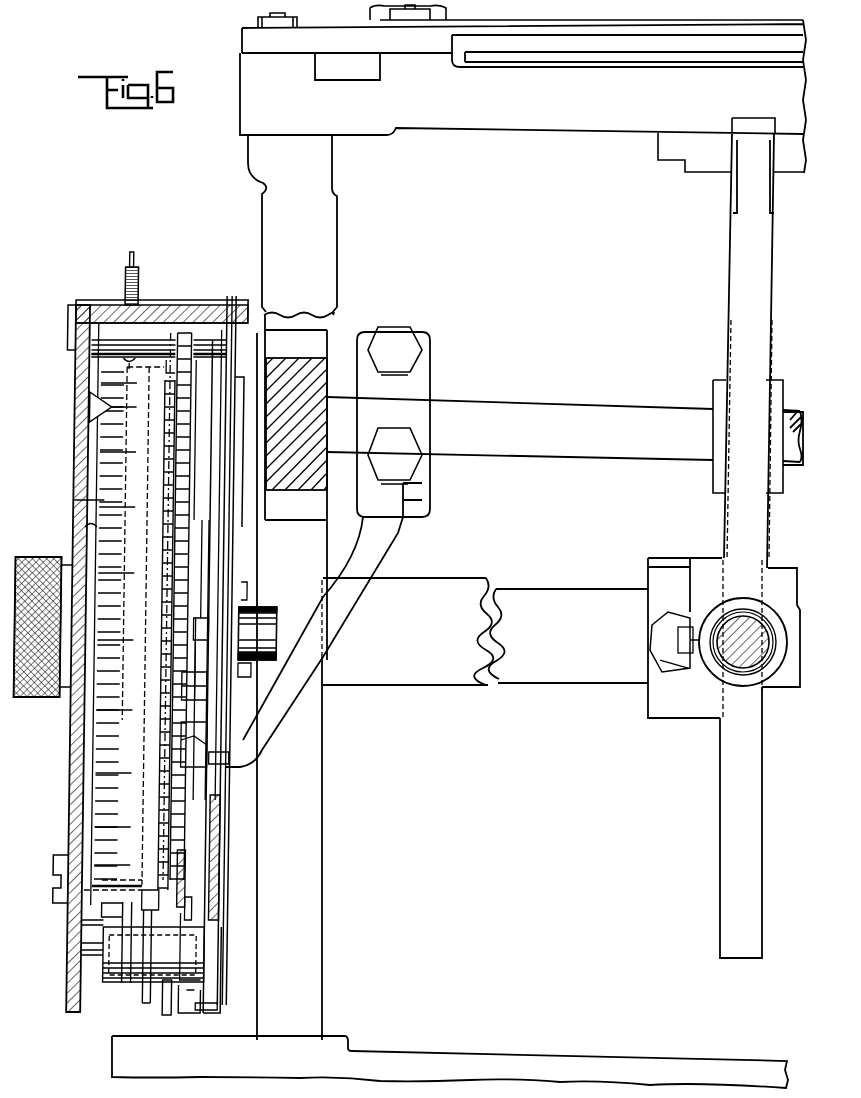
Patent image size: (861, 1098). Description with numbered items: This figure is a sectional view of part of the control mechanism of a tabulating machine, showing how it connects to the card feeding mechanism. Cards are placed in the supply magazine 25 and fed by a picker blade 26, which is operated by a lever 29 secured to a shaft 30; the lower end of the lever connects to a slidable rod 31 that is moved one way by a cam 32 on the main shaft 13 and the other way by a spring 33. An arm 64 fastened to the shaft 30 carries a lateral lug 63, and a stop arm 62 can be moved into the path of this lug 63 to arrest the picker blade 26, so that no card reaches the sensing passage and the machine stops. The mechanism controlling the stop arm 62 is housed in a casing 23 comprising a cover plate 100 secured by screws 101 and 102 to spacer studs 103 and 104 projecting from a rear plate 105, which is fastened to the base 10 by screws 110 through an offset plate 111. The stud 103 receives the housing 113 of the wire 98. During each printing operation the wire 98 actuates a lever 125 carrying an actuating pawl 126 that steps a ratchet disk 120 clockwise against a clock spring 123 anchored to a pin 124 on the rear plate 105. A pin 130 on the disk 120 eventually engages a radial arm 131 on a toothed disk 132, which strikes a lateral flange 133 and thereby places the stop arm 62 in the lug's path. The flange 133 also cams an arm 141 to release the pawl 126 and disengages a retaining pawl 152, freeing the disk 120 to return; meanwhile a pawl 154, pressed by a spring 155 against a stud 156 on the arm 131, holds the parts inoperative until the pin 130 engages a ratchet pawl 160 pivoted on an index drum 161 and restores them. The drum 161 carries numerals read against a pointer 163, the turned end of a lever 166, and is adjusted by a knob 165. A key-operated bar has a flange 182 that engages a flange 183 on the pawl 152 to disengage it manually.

The base 10 is at (459, 554).
The main shaft 13 is at (485, 631).
The casing 23 is at (65, 786).
The supply magazine 25 is at (452, 16).
The picker blade 26 is at (731, 145).
The lever 29 is at (771, 245).
The shaft 30 is at (565, 431).
The slidable rod 31 is at (733, 625).
The cam 32 is at (741, 822).
The spring 33 is at (766, 620).
The stop arm 62 is at (214, 728).
The lateral lug 63 is at (227, 768).
The arm 64 is at (328, 547).
The wire 98 is at (134, 259).
The cover plate 100 is at (77, 461).
The screw 101 is at (68, 320).
The screw 102 is at (61, 862).
The spacer stud 103 is at (158, 340).
The spacer stud 104 is at (76, 906).
The rear plate 105 is at (238, 338).
The screws 110 is at (249, 585).
The offset plate 111 is at (259, 595).
The housing 113 is at (139, 291).
The ratchet disk 120 is at (188, 472).
The clock spring 123 is at (192, 525).
The pin 124 is at (224, 693).
The lever 125 is at (238, 546).
The actuating pawl 126 is at (178, 1012).
The pin 130 is at (193, 371).
The radial arm 131 is at (78, 850).
The toothed disk 132 is at (168, 458).
The lateral flange 133 is at (172, 940).
The arm 141 is at (158, 987).
The retaining pawl 152 is at (194, 878).
The pawl 154 is at (137, 982).
The spring 155 is at (119, 918).
The stud 156 is at (130, 957).
The ratchet pawl 160 is at (176, 350).
The index drum 161 is at (79, 498).
The pointer 163 is at (91, 405).
The knob 165 is at (63, 558).
The lever 166 is at (88, 527).
The flange 182 is at (194, 995).
The flange 183 is at (229, 1000).